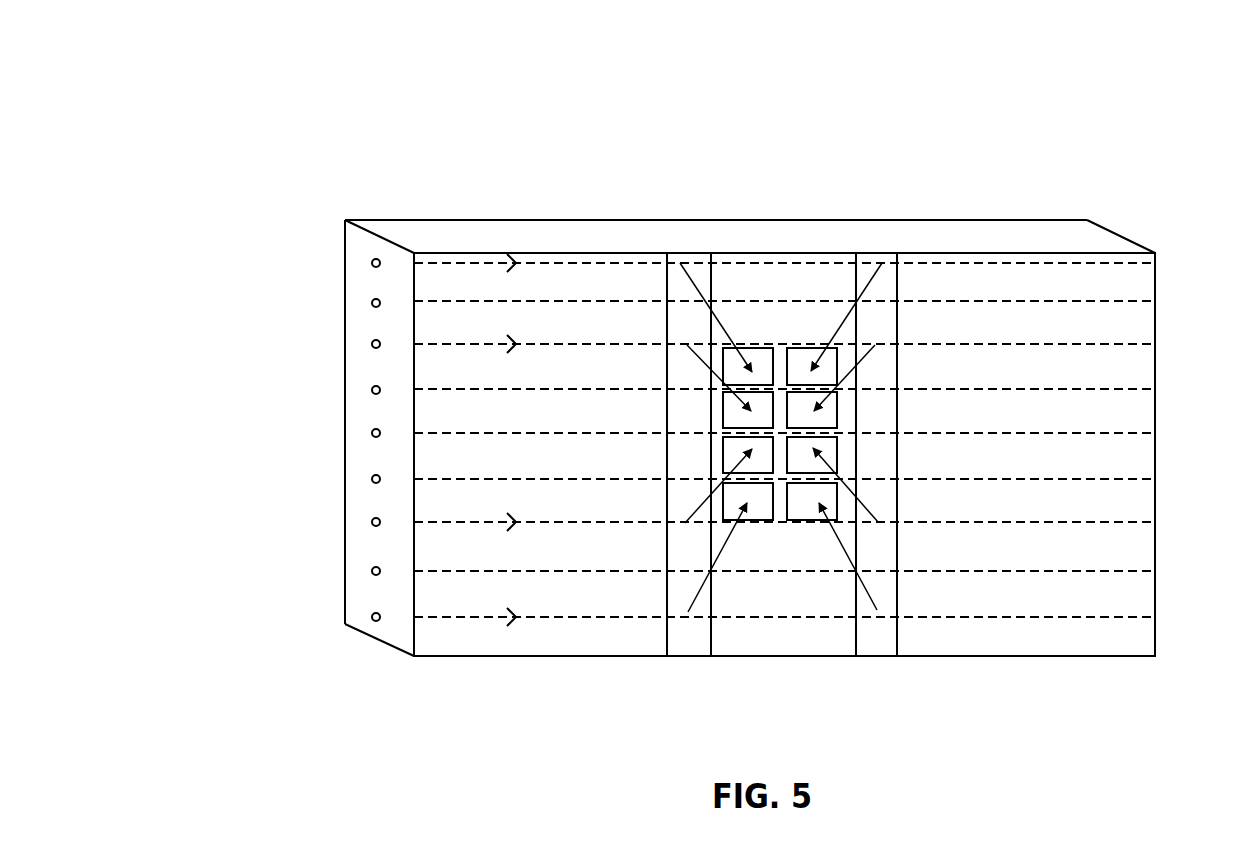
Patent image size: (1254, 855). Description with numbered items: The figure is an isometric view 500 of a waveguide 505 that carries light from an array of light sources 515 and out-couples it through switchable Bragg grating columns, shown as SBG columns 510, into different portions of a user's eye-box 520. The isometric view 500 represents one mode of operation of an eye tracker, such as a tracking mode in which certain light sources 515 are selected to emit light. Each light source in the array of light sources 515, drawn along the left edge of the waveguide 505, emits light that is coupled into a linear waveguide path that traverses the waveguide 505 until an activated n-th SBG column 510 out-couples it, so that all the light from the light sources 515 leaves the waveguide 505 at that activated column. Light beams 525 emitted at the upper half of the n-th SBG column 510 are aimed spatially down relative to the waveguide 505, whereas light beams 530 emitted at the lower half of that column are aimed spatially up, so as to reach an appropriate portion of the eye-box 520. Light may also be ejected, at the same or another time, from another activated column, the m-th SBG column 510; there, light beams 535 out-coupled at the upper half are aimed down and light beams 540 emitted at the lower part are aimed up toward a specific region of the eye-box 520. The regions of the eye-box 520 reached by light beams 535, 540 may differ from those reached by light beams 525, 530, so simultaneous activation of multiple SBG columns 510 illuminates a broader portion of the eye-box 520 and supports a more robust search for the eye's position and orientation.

The isometric view 500 is at (1045, 71).
The waveguide 505 is at (1156, 323).
The SBG column 510 is at (689, 218).
The light sources 515 is at (358, 333).
The eye-box 520 is at (797, 510).
The light beams 525 is at (715, 318).
The light beams 530 is at (707, 510).
The light beams 535 is at (868, 290).
The light beams 540 is at (862, 503).